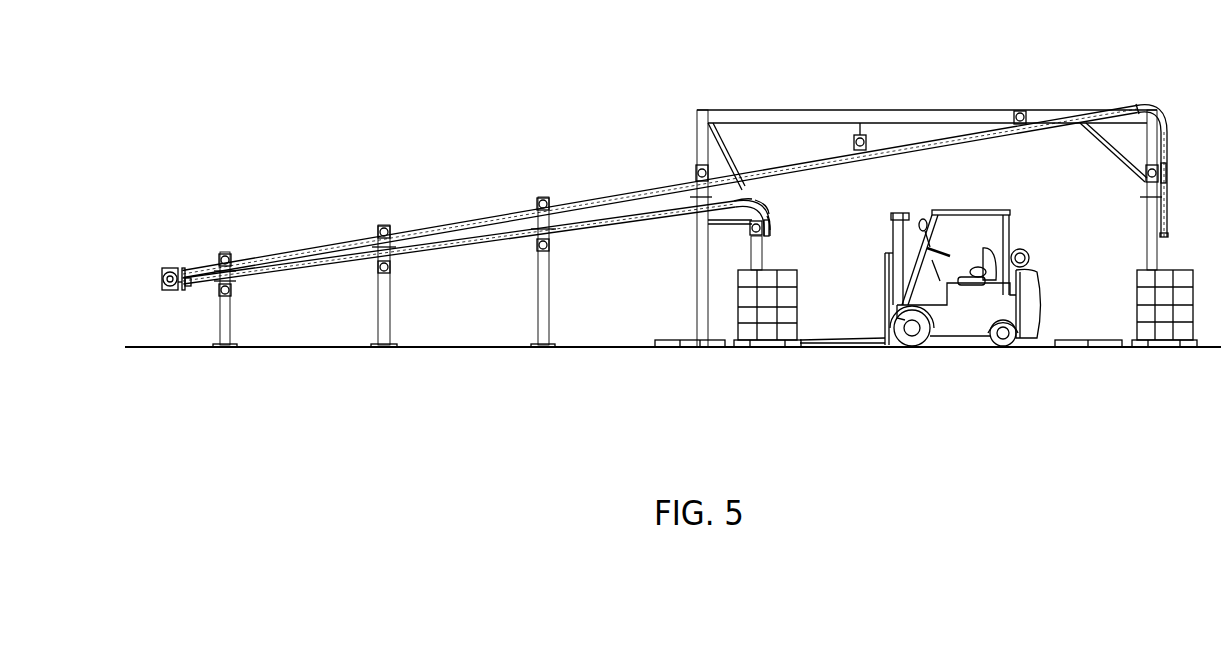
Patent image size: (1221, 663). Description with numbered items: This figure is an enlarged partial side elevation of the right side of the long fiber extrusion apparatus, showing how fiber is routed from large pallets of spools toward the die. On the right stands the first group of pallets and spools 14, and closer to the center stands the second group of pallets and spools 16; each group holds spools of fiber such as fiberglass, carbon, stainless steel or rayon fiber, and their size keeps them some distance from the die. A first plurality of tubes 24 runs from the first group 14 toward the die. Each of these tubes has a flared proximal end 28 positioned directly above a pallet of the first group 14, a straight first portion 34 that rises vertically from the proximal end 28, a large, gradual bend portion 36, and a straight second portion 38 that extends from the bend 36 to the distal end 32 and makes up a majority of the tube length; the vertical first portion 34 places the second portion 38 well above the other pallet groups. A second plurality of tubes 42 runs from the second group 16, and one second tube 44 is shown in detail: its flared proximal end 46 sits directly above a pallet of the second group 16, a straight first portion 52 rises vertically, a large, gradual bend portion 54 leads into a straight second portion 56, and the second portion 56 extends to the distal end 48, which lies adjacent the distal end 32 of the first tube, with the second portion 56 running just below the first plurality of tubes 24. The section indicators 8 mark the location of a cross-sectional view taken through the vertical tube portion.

The section line 8- 8 is at (1146, 172).
The first group of pallets and spools 14 is at (1148, 364).
The second group of pallets and spools 16 is at (751, 364).
The first plurality of tubes 24 is at (1078, 100).
The proximal end of the first tube 28 is at (1166, 238).
The distal end of the first tube 32 is at (184, 270).
The first portion of the first tube 34 is at (1166, 216).
The bend portion of the first tube 36 is at (1160, 113).
The second portion of the first tube 38 is at (1142, 108).
The second plurality of tubes 42 is at (773, 197).
The second tube 44 is at (742, 202).
The proximal end of the second tube 46 is at (768, 234).
The distal end of the second tube 48 is at (183, 292).
The first portion of the second tube 52 is at (771, 219).
The bend portion of the second tube 54 is at (770, 207).
The second portion of the second tube 56 is at (738, 203).